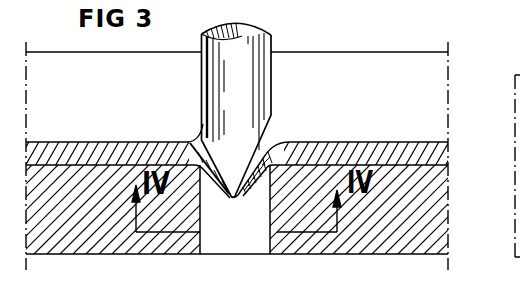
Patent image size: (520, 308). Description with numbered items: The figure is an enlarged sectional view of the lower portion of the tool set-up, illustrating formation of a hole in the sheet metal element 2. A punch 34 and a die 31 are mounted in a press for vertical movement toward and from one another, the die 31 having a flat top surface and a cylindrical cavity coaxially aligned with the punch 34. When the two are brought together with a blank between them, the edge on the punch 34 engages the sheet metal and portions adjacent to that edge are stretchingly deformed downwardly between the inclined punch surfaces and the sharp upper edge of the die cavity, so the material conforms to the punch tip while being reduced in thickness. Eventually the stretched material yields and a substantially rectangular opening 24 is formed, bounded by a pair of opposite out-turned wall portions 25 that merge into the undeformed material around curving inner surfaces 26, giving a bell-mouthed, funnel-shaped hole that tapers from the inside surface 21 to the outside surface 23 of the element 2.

The apertured sheet metal element 2 is at (428, 155).
The inside surface 21 is at (308, 143).
The outside surface 23 is at (393, 172).
The rectangular opening 24 is at (237, 200).
The out-turned wall portions 25 is at (228, 200).
The curving inner surfaces 26 is at (214, 132).
The die 31 is at (375, 243).
The punch 34 is at (270, 157).